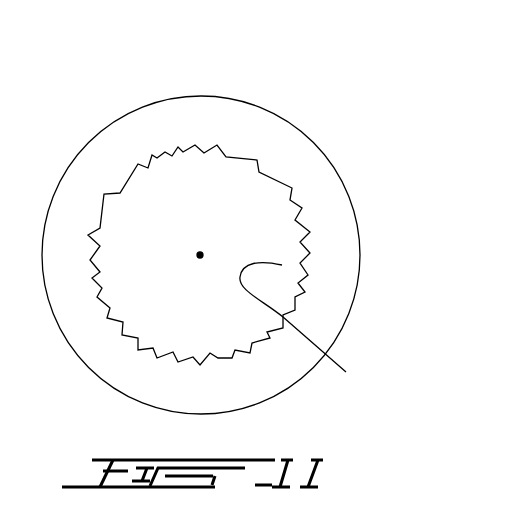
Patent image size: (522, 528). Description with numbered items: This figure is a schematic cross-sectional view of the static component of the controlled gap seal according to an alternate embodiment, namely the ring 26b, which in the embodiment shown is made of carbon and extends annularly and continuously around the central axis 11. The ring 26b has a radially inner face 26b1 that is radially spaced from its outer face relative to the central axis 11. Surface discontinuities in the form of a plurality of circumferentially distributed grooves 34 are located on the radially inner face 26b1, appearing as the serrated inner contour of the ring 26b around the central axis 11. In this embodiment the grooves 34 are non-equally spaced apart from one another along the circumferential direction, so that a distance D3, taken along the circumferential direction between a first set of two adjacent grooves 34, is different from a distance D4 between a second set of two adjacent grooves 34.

The ring 26b is at (336, 110).
The radially inner face 26b1 is at (305, 336).
The grooves 34 is at (288, 233).
The central axis 11 is at (192, 272).
The distance D3 is at (148, 134).
The distance D4 is at (138, 145).